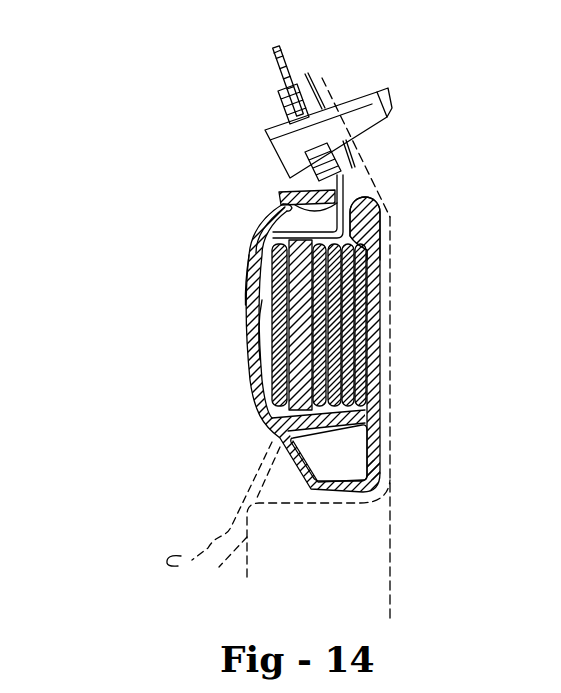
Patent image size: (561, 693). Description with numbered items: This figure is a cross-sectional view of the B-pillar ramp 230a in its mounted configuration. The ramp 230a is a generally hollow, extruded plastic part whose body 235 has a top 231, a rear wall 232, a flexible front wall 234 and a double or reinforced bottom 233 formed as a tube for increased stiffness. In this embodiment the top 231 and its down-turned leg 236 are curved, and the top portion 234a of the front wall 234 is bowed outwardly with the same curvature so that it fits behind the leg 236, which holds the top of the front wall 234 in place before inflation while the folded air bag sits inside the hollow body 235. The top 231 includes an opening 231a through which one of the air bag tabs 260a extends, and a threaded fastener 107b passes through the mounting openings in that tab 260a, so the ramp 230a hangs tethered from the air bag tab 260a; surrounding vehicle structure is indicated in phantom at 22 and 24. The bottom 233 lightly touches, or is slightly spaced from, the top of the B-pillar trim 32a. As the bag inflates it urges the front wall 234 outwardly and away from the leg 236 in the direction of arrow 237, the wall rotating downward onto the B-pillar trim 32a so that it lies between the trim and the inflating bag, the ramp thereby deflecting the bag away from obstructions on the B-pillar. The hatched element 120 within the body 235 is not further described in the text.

The vehicle body panel 22 is at (334, 71).
The seat back / trim panel 24 is at (394, 426).
The B-pillar trim 32a is at (289, 521).
The threaded fastener 107b is at (347, 113).
The heater element fins 120 is at (297, 298).
The ramp 230a is at (247, 352).
The top 231 is at (363, 205).
The opening 231a is at (294, 196).
The rear wall 232 is at (377, 318).
The bottom 233 is at (348, 455).
The front wall 234 is at (243, 323).
The top portion 234a is at (292, 194).
The body 235 is at (246, 282).
The down-turned leg 236 is at (258, 248).
The arrow 237 is at (253, 247).
The tab 260a is at (281, 47).